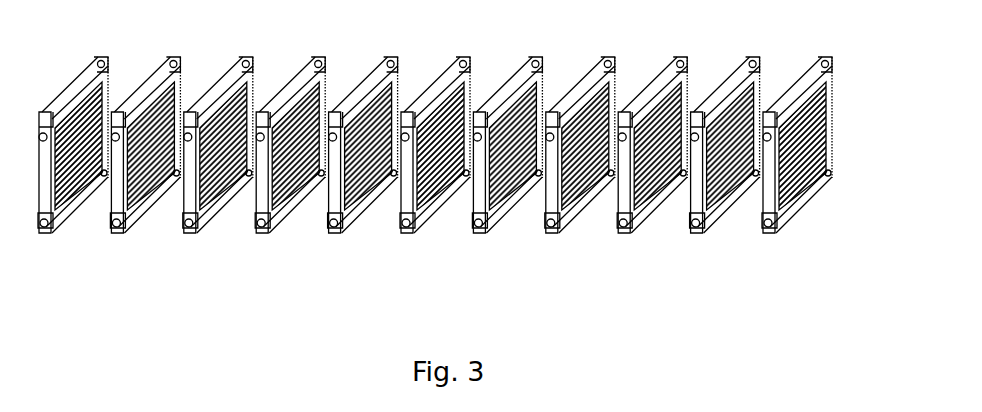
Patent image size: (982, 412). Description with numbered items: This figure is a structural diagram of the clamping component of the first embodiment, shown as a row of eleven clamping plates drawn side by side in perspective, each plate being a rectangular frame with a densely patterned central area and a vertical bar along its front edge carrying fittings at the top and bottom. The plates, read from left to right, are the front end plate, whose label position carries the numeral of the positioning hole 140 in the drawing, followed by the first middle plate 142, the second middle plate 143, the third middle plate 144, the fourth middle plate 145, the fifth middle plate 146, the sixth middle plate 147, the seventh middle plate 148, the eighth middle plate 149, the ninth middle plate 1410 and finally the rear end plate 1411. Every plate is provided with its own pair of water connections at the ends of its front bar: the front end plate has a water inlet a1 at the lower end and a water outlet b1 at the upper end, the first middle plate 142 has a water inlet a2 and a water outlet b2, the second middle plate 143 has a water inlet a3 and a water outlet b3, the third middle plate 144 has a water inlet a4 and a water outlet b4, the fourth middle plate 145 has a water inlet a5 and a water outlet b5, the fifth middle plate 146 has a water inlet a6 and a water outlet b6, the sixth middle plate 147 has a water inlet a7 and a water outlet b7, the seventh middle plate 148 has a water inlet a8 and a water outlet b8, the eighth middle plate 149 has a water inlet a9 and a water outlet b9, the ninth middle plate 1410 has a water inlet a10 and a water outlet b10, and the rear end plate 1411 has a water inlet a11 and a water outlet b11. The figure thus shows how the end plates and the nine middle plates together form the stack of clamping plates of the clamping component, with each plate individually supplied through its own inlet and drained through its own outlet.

The positioning hole 140 is at (48, 190).
The first middle plate 142 is at (147, 179).
The second middle plate 143 is at (218, 179).
The third middle plate 144 is at (291, 179).
The fourth middle plate 145 is at (365, 179).
The fifth middle plate 146 is at (435, 179).
The sixth middle plate 147 is at (508, 179).
The seventh middle plate 148 is at (581, 179).
The eighth middle plate 149 is at (654, 179).
The ninth middle plate 1410 is at (728, 179).
The rear end plate 1411 is at (804, 179).
The water inlet a1 is at (52, 272).
The water inlet a2 is at (123, 272).
The water inlet a3 is at (196, 272).
The water inlet a4 is at (268, 272).
The water inlet a5 is at (341, 272).
The water inlet a6 is at (413, 272).
The water inlet a7 is at (485, 272).
The water inlet a8 is at (558, 272).
The water inlet a9 is at (630, 272).
The water inlet a10 is at (707, 272).
The water inlet a11 is at (778, 272).
The water outlet b1 is at (52, 84).
The water outlet b2 is at (122, 84).
The water outlet b3 is at (195, 84).
The water outlet b4 is at (267, 84).
The water outlet b5 is at (340, 84).
The water outlet b6 is at (412, 84).
The water outlet b7 is at (484, 84).
The water outlet b8 is at (557, 84).
The water outlet b9 is at (629, 84).
The water outlet b10 is at (707, 84).
The water outlet b11 is at (780, 84).